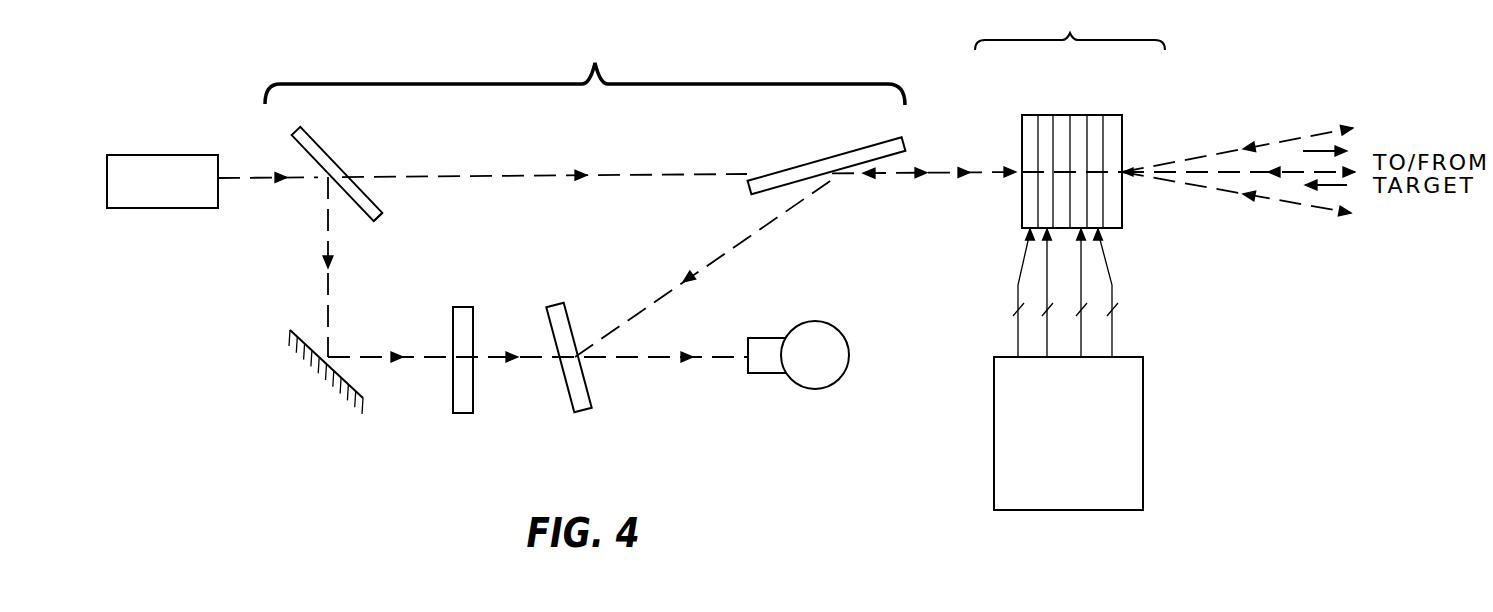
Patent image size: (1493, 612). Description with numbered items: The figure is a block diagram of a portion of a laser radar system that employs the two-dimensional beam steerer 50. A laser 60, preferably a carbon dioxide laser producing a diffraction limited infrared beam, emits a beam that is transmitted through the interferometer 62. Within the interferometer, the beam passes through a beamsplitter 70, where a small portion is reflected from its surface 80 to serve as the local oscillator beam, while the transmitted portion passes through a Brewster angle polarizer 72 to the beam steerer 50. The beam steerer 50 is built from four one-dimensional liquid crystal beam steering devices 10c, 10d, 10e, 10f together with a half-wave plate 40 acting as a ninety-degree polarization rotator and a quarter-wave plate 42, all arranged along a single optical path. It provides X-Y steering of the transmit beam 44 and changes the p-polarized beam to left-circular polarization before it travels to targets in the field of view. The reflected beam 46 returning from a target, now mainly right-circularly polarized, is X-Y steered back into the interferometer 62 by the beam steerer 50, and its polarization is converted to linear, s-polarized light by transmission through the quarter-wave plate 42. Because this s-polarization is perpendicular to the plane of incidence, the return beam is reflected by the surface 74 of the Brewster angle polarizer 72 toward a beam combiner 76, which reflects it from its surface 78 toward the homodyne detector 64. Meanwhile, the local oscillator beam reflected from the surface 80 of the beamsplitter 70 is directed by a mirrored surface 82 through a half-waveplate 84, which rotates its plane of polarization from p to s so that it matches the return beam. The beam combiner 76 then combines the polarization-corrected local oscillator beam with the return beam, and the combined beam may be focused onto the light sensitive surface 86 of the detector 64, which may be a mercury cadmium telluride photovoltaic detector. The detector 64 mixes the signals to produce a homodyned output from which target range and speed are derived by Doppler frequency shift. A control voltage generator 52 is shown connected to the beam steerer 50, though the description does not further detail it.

The laser 60 is at (166, 155).
The interferometer 62 is at (585, 70).
The beamsplitter 70 is at (315, 142).
The surface of beamsplitter 80 is at (363, 217).
The Brewster angle polarizer 72 is at (866, 150).
The surface of Brewster angle polarizer 74 is at (895, 162).
The transmit beam 44 is at (966, 174).
The reflected beam 46 is at (1010, 172).
The mirrored surface 82 is at (352, 383).
The half-waveplate 84 is at (463, 307).
The beam combiner 76 is at (556, 304).
The surface of beam combiner 78 is at (595, 392).
The homodyne detector 64 is at (816, 322).
The light sensitive surface of detector 86 is at (748, 366).
The beam steerer 50 is at (1070, 29).
The quarter-wave plate 42 is at (1122, 115).
The half-wave plate 40 is at (1060, 113).
The one-dimensional liquid crystal beam steering device 10c is at (1028, 113).
The one-dimensional liquid crystal beam steering device 10d is at (1041, 113).
The one-dimensional liquid crystal beam steering device 10e is at (1078, 113).
The one-dimensional liquid crystal beam steering device 10f is at (1098, 113).
The XMIT/RCV X-Y control voltage generator 52 is at (1140, 425).